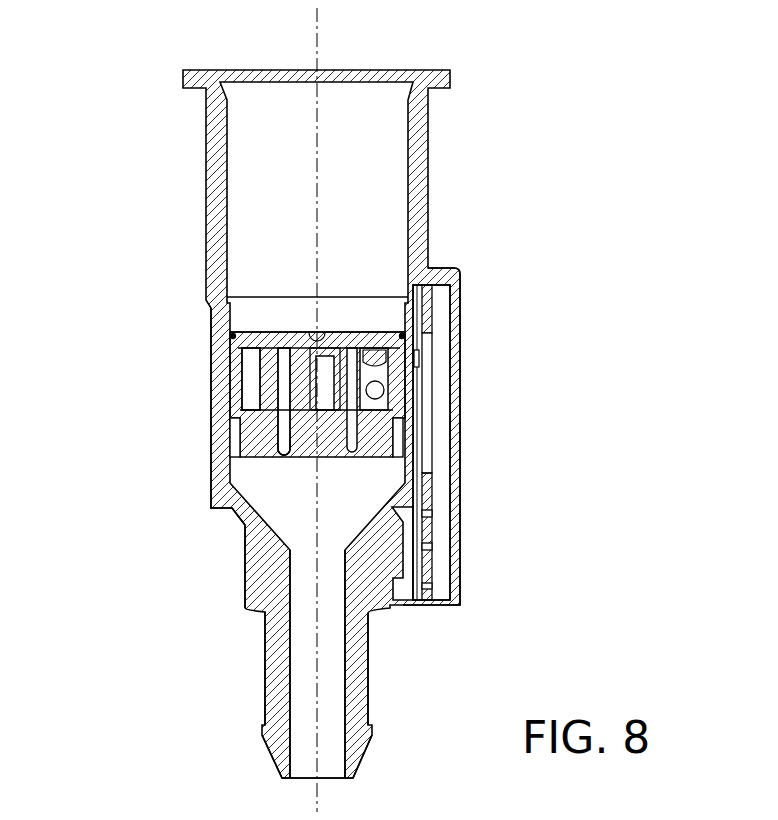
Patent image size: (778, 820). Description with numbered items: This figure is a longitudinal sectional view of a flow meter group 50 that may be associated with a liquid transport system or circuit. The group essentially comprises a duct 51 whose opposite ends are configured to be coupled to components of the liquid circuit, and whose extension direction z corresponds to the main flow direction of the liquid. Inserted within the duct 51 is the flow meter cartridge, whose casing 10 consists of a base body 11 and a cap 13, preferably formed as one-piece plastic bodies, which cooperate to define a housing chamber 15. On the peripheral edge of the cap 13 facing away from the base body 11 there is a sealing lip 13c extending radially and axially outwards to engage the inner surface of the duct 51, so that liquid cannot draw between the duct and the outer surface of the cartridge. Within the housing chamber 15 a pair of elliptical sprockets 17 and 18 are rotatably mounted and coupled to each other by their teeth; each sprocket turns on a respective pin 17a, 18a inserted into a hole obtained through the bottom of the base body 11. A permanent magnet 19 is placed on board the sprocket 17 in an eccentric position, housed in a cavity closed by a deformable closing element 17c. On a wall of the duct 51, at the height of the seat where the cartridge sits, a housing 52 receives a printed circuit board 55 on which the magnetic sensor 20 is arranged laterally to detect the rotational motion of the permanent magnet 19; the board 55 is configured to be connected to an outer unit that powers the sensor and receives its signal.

The extension direction Z is at (318, 95).
The flow meter group 50 is at (200, 133).
The duct 51 is at (207, 283).
The housing 52 is at (447, 345).
The casing 10 is at (214, 439).
The base body 11 is at (407, 438).
The cap 13 is at (280, 328).
The sealing lip 13c is at (232, 334).
The housing chamber 15 is at (250, 383).
The elliptical sprocket 17 is at (375, 356).
The pin 17a is at (390, 605).
The deformable closing element 17c is at (384, 388).
The elliptical sprocket 18 is at (270, 388).
The pin 18a is at (287, 460).
The permanent magnet 19 is at (385, 297).
The magnetic sensor 20 is at (433, 377).
The printed circuit board 55 is at (434, 527).